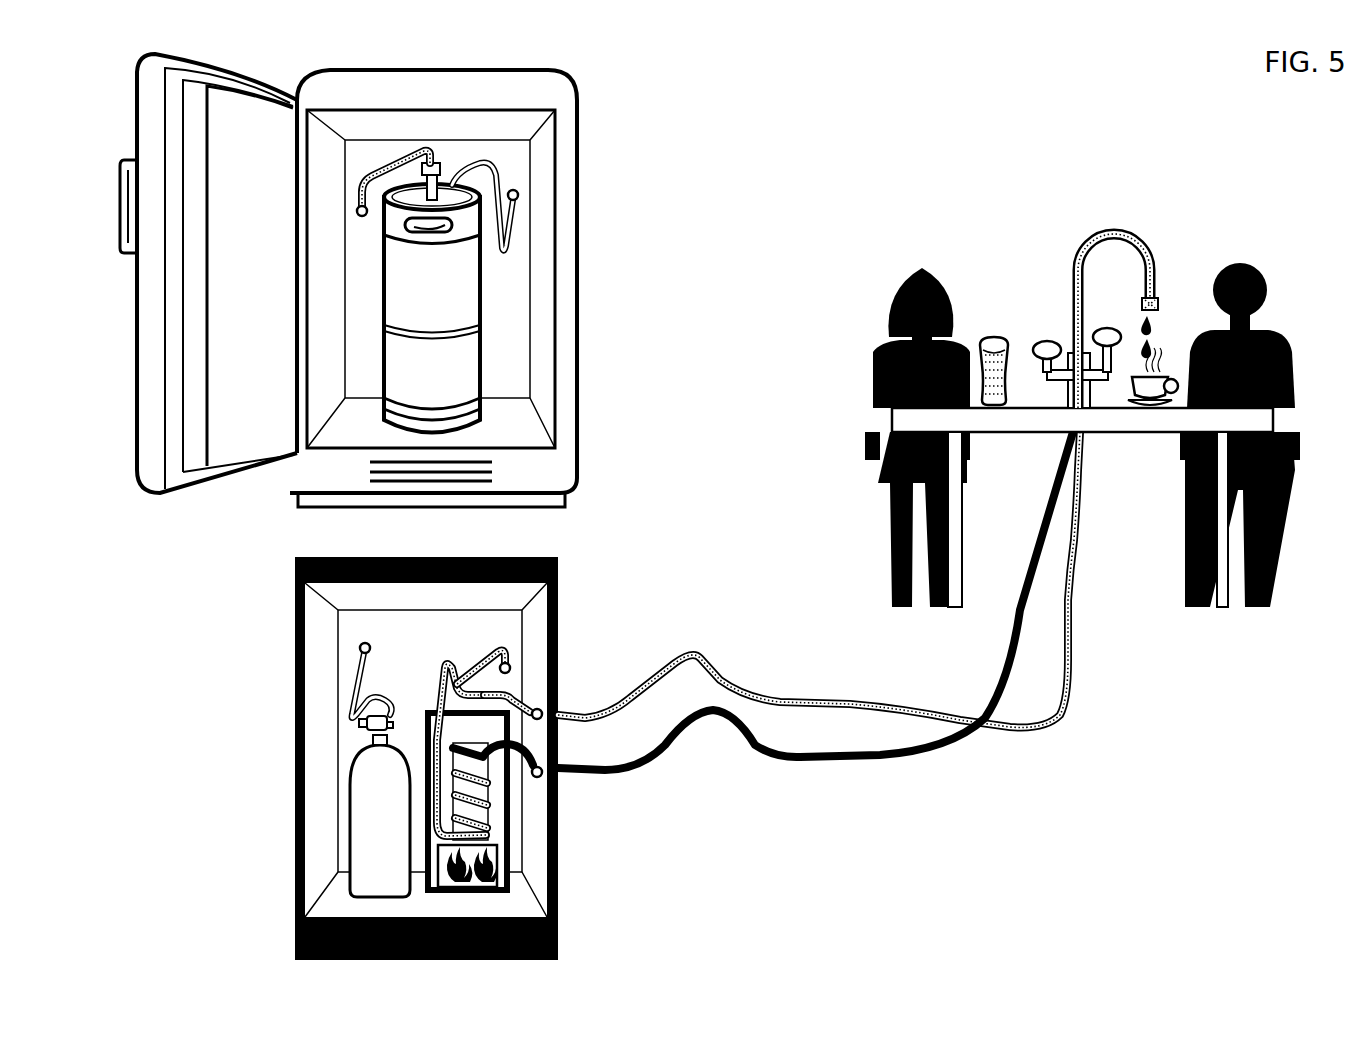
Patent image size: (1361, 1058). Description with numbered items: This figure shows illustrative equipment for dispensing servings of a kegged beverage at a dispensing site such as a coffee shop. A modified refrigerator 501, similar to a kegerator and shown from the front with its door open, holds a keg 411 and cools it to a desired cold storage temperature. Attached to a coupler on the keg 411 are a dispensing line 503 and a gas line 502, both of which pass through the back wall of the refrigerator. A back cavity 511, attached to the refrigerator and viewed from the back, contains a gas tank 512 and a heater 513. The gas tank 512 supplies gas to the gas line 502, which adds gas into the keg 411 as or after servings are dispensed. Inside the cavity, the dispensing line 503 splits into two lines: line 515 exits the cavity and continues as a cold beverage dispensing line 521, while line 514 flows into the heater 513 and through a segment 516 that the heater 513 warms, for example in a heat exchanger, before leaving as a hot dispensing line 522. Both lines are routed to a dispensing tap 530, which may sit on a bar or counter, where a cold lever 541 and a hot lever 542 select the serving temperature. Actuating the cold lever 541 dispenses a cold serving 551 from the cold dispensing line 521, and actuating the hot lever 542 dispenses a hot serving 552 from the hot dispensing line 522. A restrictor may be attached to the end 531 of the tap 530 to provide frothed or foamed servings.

The modified refrigerator 501 is at (582, 102).
The keg 411 is at (482, 368).
The dispensing line 503 is at (405, 160).
The gas line 502 is at (510, 227).
The back cavity 511 is at (296, 645).
The gas tank 512 is at (362, 797).
The heater 513 is at (510, 855).
The line 514 is at (437, 692).
The line 515 is at (524, 707).
The segment 516 is at (490, 800).
The cold beverage dispensing line 521 is at (722, 672).
The hot dispensing line 522 is at (770, 752).
The dispensing tap 530 is at (1095, 293).
The end of tap 531 is at (1155, 295).
The cold lever 541 is at (1045, 340).
The hot lever 542 is at (1113, 330).
The cold serving 551 is at (992, 337).
The hot serving 552 is at (1163, 380).